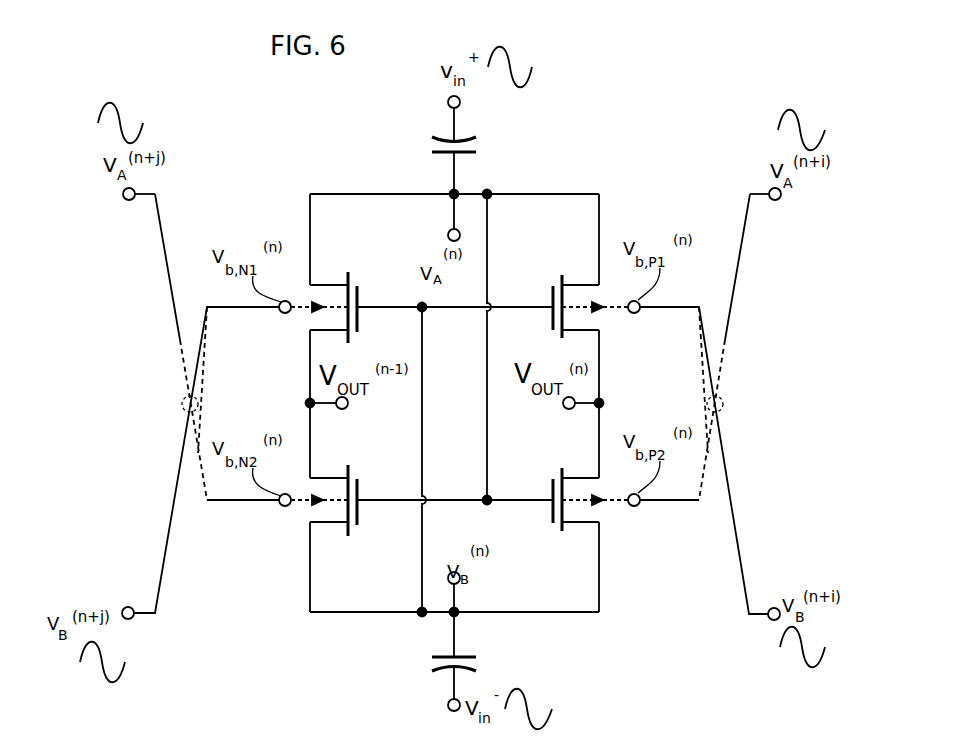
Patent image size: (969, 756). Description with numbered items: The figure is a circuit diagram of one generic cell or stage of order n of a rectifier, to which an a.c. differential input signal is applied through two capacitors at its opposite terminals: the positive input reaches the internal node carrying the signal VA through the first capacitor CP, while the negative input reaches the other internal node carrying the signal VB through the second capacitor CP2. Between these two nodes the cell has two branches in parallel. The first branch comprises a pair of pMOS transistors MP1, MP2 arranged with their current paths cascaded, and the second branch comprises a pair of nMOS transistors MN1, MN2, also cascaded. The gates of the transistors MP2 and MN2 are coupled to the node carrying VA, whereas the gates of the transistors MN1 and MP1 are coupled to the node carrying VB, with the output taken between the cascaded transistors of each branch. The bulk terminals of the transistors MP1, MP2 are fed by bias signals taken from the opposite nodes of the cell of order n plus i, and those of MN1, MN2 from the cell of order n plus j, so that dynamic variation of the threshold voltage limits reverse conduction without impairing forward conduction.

The nMOS transistor MN1 is at (347, 279).
The nMOS transistor MN2 is at (347, 478).
The pMOS transistor MP1 is at (552, 288).
The pMOS transistor MP2 is at (552, 481).
The capacitor CP is at (467, 141).
The capacitor CP2 is at (464, 656).